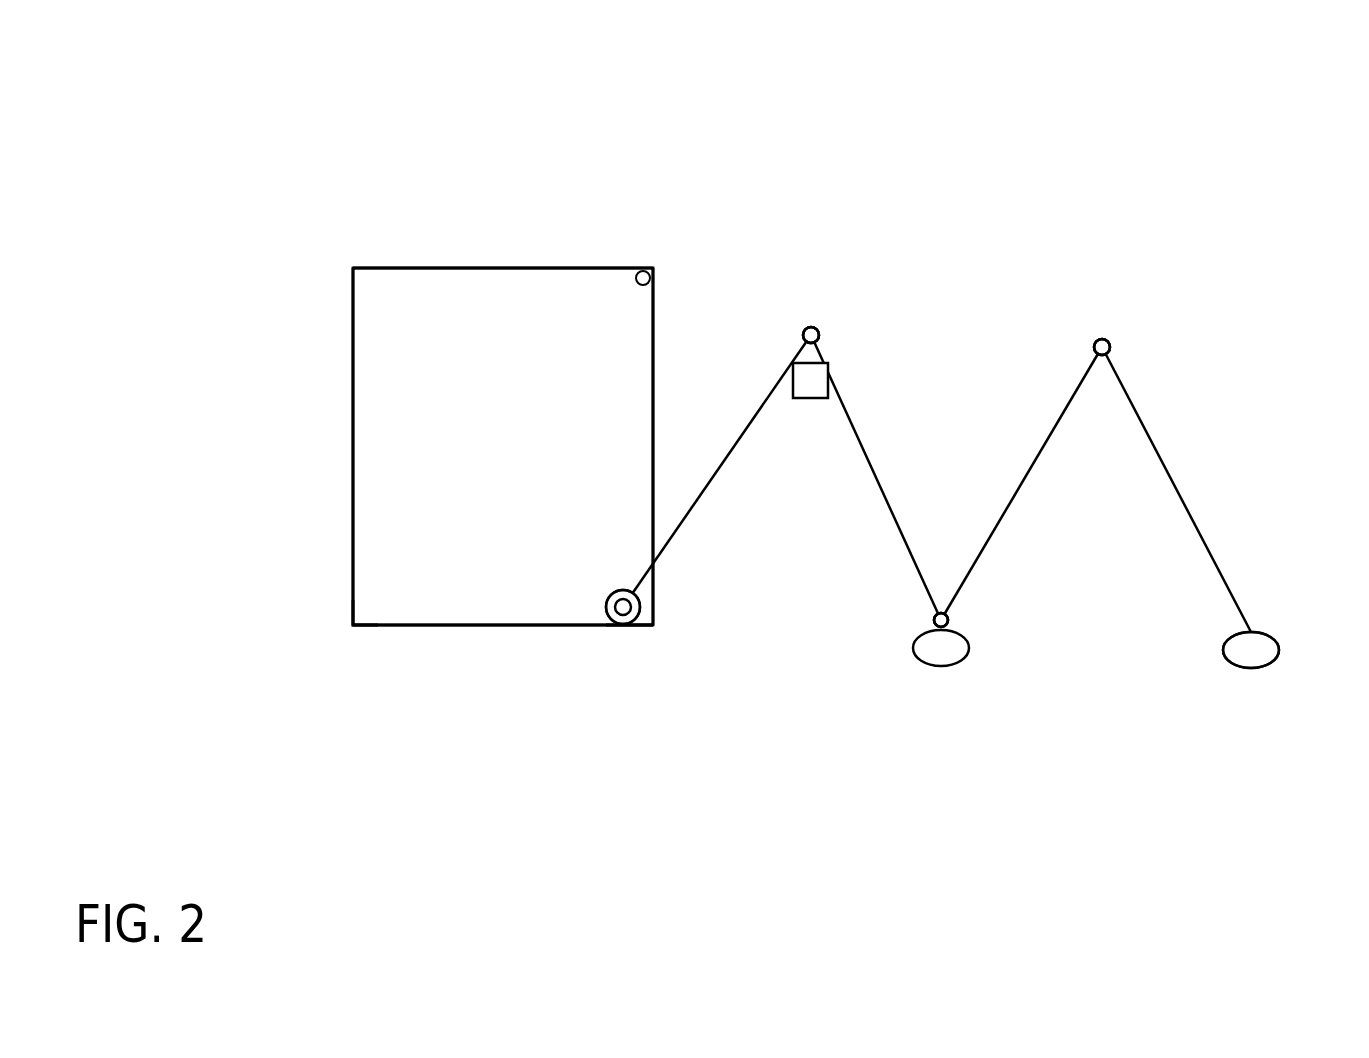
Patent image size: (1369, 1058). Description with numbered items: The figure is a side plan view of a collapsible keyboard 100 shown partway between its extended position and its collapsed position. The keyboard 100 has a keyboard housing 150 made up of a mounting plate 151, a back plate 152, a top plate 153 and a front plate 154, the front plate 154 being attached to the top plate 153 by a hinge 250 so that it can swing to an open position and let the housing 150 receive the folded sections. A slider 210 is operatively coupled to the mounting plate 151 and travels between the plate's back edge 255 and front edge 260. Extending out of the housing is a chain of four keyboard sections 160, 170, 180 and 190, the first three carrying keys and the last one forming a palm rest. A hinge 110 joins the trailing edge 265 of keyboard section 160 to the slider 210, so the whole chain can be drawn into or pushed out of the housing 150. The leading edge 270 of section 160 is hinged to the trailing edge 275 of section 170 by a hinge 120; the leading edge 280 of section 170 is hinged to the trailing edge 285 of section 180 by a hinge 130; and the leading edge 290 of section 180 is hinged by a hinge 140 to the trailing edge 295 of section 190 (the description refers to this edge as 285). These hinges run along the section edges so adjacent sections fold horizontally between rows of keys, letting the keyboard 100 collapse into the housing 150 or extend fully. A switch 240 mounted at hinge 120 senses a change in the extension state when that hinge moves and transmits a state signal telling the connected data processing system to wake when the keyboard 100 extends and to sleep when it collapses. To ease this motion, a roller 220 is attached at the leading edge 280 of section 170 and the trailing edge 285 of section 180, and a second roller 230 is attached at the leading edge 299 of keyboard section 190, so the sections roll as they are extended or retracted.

The keyboard 100 is at (282, 183).
The hinge 110 is at (618, 590).
The hinge 120 is at (822, 326).
The hinge 130 is at (941, 612).
The hinge 140 is at (1103, 338).
The keyboard housing 150 is at (353, 267).
The mounting plate 151 is at (435, 627).
The back plate 152 is at (353, 423).
The top plate 153 is at (498, 268).
The front plate 154 is at (653, 345).
The keyboard section 160 is at (735, 440).
The keyboard section 170 is at (868, 450).
The keyboard section 180 is at (1037, 455).
The keyboard section 190 is at (1178, 503).
The slider 210 is at (643, 608).
The roller 220 is at (940, 667).
The roller 230 is at (1250, 668).
The switch 240 is at (810, 400).
The hinge 250 is at (643, 270).
The back edge 255 is at (340, 633).
The front edge 260 is at (642, 635).
The trailing edge 265 is at (632, 585).
The leading edge 270 is at (792, 325).
The trailing edge 275 is at (828, 333).
The leading edge 280 is at (928, 611).
The trailing edge 285 is at (958, 612).
The leading edge 290 is at (1090, 347).
The sixth node connection 295 is at (1116, 357).
The leading edge 299 is at (1238, 618).